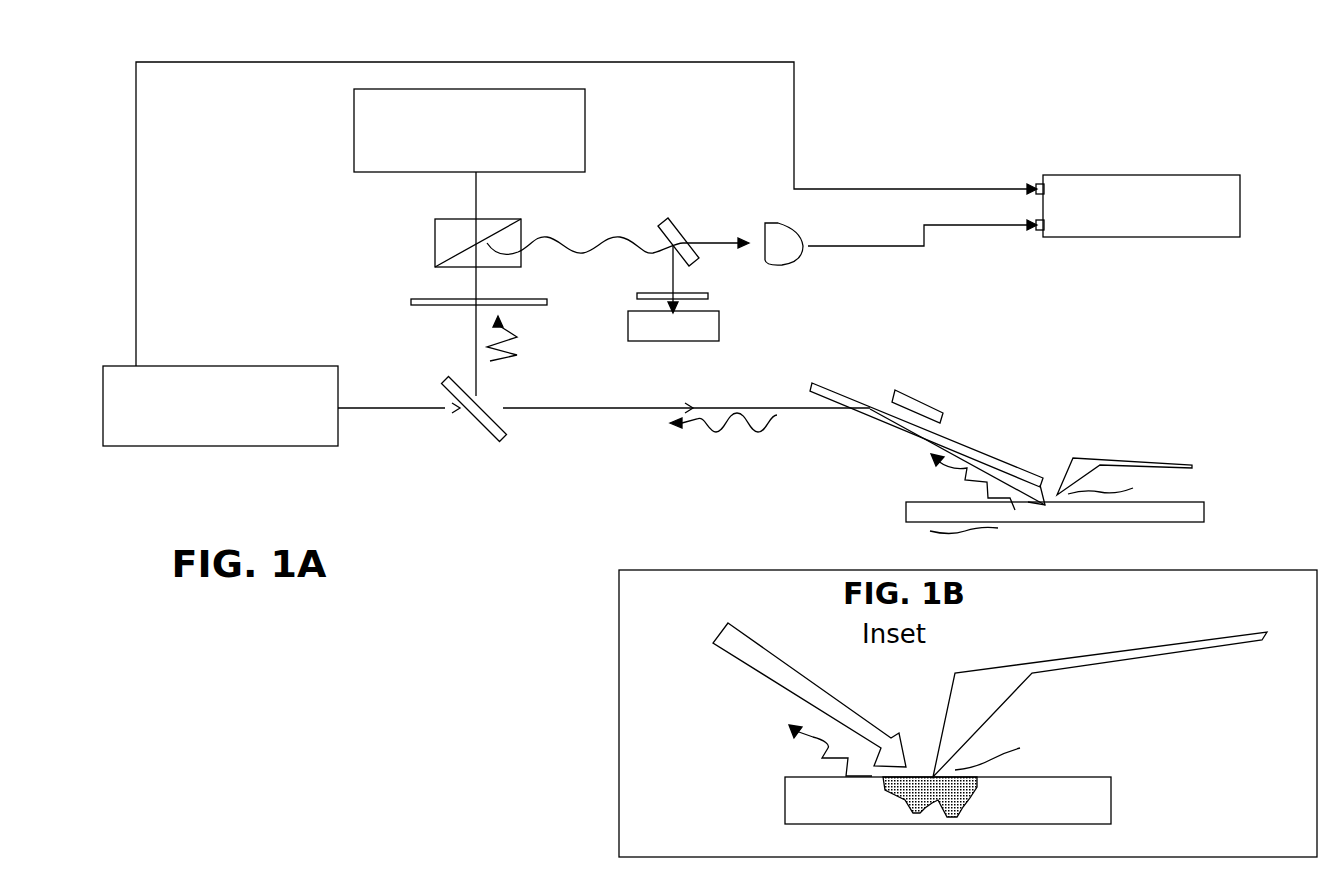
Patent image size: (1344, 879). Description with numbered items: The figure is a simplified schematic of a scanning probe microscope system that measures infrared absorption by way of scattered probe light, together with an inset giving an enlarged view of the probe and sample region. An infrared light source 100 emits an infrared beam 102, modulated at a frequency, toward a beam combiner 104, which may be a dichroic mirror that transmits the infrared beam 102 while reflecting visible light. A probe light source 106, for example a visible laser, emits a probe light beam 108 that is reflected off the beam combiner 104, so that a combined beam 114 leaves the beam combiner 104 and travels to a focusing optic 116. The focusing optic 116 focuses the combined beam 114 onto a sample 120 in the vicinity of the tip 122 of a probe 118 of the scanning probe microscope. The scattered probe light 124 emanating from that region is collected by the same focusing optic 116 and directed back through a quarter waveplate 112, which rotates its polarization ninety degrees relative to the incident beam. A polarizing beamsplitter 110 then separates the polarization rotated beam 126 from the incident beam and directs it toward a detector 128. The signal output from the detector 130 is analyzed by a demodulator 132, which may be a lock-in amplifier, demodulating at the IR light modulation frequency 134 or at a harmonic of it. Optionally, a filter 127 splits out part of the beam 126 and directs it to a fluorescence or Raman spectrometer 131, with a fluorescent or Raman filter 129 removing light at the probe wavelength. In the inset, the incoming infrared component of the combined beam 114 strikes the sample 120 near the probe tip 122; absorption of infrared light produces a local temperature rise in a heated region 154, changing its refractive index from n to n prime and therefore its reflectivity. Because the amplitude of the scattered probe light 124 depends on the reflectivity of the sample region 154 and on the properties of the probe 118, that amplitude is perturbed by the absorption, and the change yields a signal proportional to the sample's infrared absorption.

In FIG. 1A, the infrared light source 100 is at (220, 406).
In FIG. 1A, the infrared beam 102 is at (399, 423).
In FIG. 1A, the beam combiner 104 is at (486, 423).
In FIG. 1A, the probe light source 106 is at (469, 130).
In FIG. 1A, the probe light beam 108 is at (489, 284).
In FIG. 1A, the polarizing beamsplitter 110 is at (458, 243).
In FIG. 1A, the quarter waveplate 112 is at (490, 326).
In FIG. 1A, the combined beam 114 is at (686, 409).
In FIG. 1B, the combined beam 114 is at (777, 695).
In FIG. 1A, the focusing optic 116 is at (927, 442).
In FIG. 1A, the probe 118 is at (1124, 472).
In FIG. 1B, the probe 118 is at (1100, 704).
In FIG. 1A, the sample 120 is at (1055, 535).
In FIG. 1B, the sample 120 is at (971, 800).
In FIG. 1A, the tip 122 is at (1118, 489).
In FIG. 1B, the tip 122 is at (1009, 755).
In FIG. 1A, the scattered probe light 124 is at (947, 482).
In FIG. 1B, the scattered probe light 124 is at (794, 750).
In FIG. 1A, the polarization rotated beam 126 is at (618, 237).
In FIG. 1A, the filter 127 is at (669, 262).
In FIG. 1A, the detector 128 is at (775, 239).
In FIG. 1A, the fluorescent or Raman filter 129 is at (696, 301).
In FIG. 1A, the signal output from the detector 130 is at (926, 246).
In FIG. 1A, the fluorescence or Raman spectrometer 131 is at (700, 327).
In FIG. 1A, the demodulator 132 is at (1141, 206).
In FIG. 1A, the IR light modulation frequency f_IR 134 is at (590, 214).
In FIG. 1B, the heated region 154 is at (947, 797).